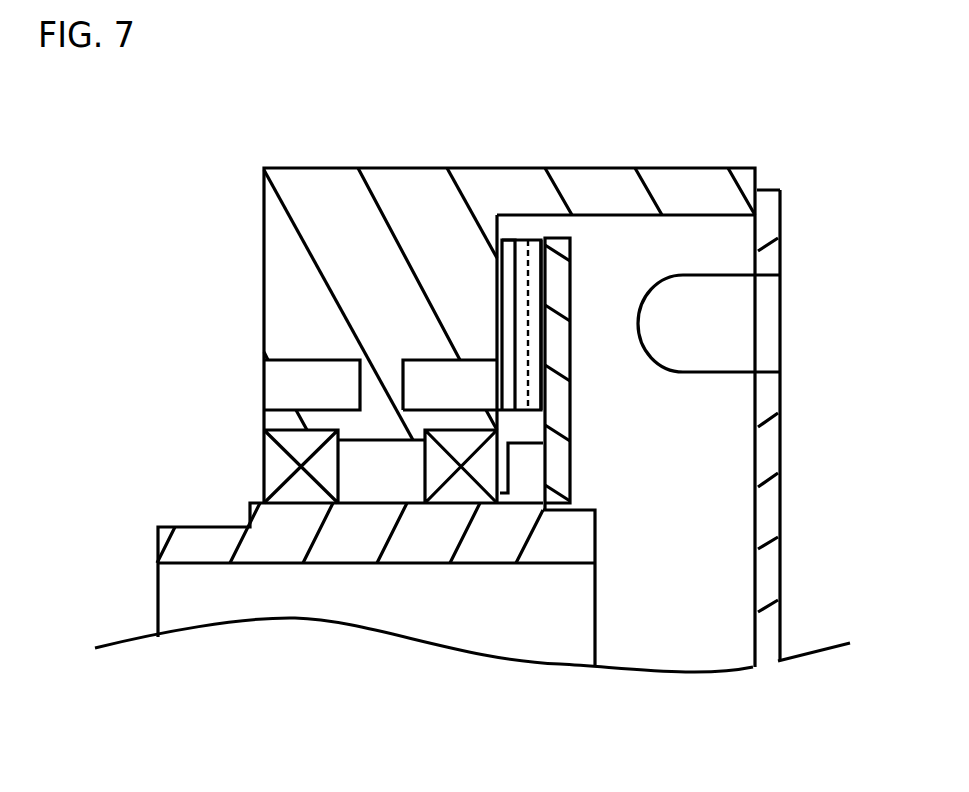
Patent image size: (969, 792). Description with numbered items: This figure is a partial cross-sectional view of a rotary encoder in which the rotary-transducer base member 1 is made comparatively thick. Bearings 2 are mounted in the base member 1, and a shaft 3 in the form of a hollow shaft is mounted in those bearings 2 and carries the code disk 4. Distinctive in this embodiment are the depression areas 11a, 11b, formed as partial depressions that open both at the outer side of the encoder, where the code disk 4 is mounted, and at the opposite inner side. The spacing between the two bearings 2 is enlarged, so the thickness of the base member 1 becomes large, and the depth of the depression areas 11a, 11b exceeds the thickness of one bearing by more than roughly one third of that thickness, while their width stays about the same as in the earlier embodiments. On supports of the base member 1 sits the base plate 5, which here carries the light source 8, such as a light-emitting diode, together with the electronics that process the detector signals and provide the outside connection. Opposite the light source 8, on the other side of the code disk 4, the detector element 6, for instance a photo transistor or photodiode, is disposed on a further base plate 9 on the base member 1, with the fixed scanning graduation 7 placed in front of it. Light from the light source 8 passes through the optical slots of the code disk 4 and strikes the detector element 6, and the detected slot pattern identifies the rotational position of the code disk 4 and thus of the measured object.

The rotary-transducer base member 1 is at (277, 278).
The bearings 2 is at (283, 458).
The shaft 3 is at (270, 517).
The code disk 4 is at (565, 457).
The base plate 5 is at (762, 603).
The detector element 6 is at (523, 240).
The fixed scanning graduation 7 is at (568, 212).
The light source 8 is at (762, 330).
The further base plate 9 is at (497, 255).
The depression area 11a is at (300, 378).
The depression area 11b is at (543, 382).